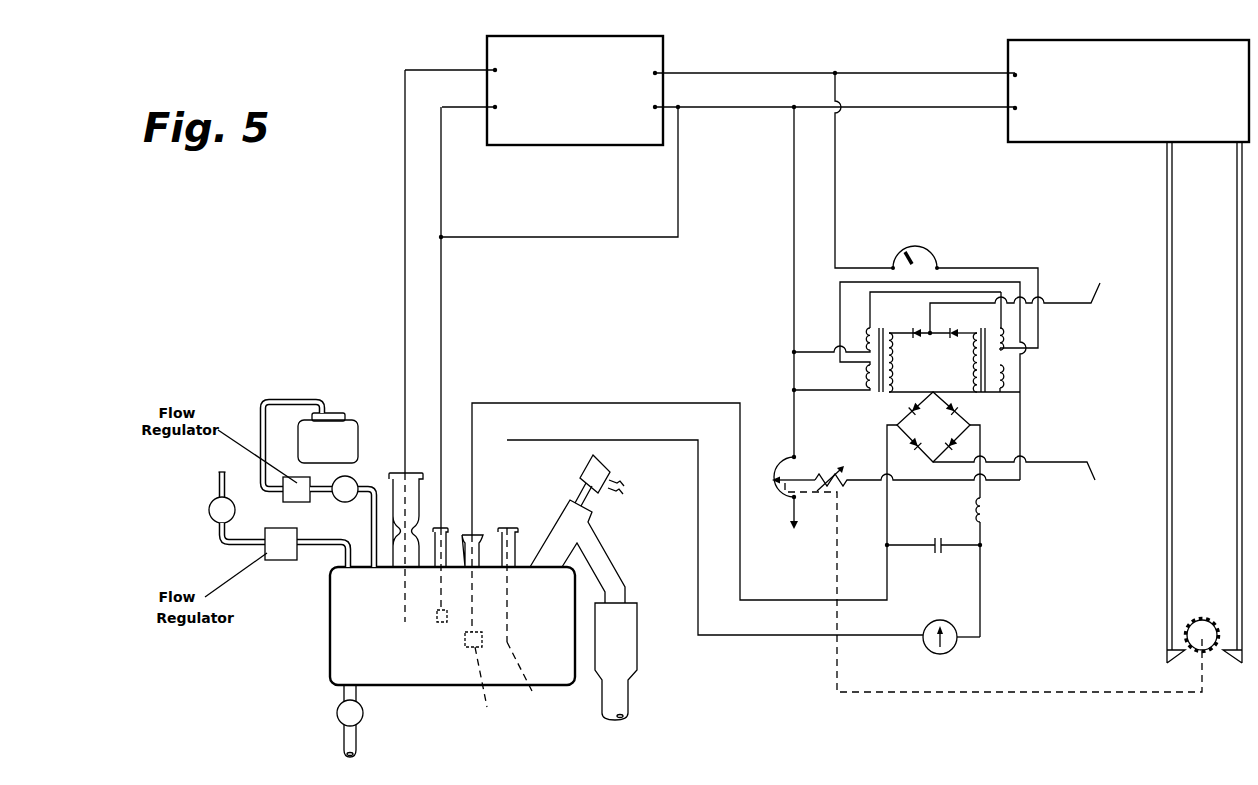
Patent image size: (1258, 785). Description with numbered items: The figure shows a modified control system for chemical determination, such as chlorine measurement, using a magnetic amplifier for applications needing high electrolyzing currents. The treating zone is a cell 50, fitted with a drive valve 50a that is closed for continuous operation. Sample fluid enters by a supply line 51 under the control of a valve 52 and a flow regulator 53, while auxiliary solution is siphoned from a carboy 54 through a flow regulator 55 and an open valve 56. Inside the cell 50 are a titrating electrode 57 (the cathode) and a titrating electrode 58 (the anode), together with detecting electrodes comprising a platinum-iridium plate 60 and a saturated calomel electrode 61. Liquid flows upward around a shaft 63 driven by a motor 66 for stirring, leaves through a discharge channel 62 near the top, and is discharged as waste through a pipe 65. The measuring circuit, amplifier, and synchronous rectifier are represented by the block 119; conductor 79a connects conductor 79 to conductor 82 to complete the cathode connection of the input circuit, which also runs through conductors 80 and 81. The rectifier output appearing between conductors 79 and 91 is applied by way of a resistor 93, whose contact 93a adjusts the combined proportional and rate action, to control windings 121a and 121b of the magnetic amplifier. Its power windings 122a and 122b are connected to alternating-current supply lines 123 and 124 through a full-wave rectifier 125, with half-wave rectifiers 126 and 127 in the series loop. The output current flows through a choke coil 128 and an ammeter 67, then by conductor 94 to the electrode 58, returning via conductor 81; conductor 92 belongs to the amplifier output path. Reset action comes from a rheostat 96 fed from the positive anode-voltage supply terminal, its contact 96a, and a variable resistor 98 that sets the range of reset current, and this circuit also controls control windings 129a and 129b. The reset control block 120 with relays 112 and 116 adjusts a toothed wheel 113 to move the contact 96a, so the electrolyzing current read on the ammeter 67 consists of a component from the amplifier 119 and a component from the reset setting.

The cell 50 is at (330, 650).
The drive valve 50a is at (363, 713).
The supply line 51 is at (220, 477).
The valve 52 is at (218, 521).
The flow regulator 53 is at (293, 552).
The carboy 54 is at (328, 438).
The flow regulator 55 is at (293, 495).
The valve 56 is at (342, 521).
The titrating electrode 57 is at (483, 630).
The titrating electrode 58 is at (526, 621).
The detecting electrode 60 is at (437, 622).
The calomel electrode 61 is at (400, 597).
The discharge channel 62 is at (598, 540).
The shaft 63 is at (578, 493).
The pipe 65 is at (640, 657).
The motor 66 is at (610, 468).
The ammeter 67 is at (950, 650).
The conductor 79 is at (770, 107).
The conductor 79a is at (562, 237).
The conductor 80 is at (787, 262).
The conductor 81 is at (647, 403).
The conductor 82 is at (441, 336).
The output conductor 91 is at (745, 73).
The conductor 92 is at (850, 265).
The resistor 93 is at (937, 258).
The contact 93a is at (920, 255).
The conductor 94 is at (747, 637).
The rheostat 96 is at (778, 460).
The contact 96a is at (796, 477).
The resistor 98 is at (837, 480).
The relay 112 is at (1237, 228).
The toothed wheel 113 is at (1212, 650).
The relay 116 is at (1166, 200).
The amplifier 119 is at (543, 43).
The reset control 120 is at (1075, 53).
The control winding 121a is at (1004, 337).
The control winding 121b is at (867, 338).
The power winding 122a is at (888, 390).
The power winding 122b is at (983, 393).
The alternating-current supply line 123 is at (1026, 295).
The alternating-current supply line 124 is at (1025, 480).
The full-wave rectifier 125 is at (933, 427).
The half-wave rectifier 126 is at (913, 330).
The half-wave rectifier 127 is at (950, 335).
The choke coil 128 is at (987, 512).
The control winding 129a is at (1004, 377).
The control winding 129b is at (867, 375).